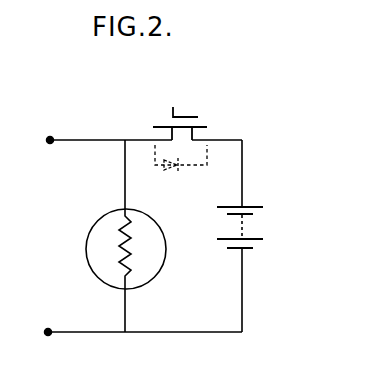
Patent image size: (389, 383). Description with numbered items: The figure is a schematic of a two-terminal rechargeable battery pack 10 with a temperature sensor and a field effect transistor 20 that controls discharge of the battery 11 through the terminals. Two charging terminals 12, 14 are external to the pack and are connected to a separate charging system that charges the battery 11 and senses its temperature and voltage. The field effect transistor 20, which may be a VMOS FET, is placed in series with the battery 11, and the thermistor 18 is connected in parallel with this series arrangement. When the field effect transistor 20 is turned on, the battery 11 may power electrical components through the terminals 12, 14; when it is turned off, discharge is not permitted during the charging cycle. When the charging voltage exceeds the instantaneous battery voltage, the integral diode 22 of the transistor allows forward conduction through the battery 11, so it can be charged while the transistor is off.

The battery pack 10 is at (265, 218).
The battery 11 is at (252, 255).
The charging terminal 12 is at (48, 136).
The charging terminal 14 is at (47, 328).
The thermistor 18 is at (164, 231).
The field effect transistor 20 is at (204, 113).
The integral diode 22 is at (163, 169).